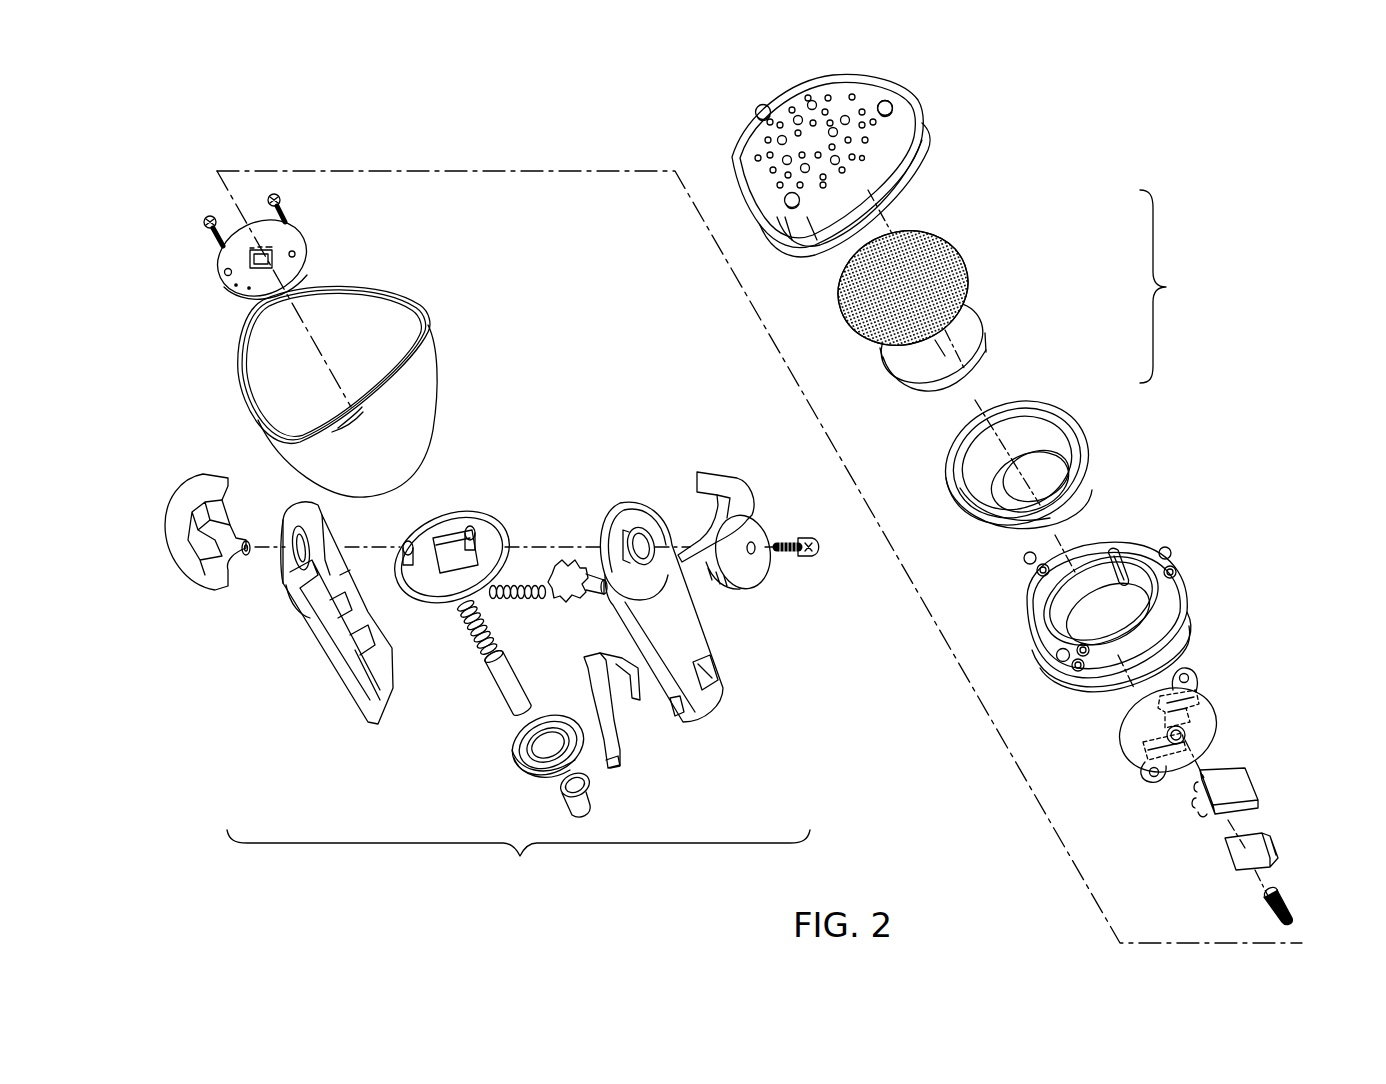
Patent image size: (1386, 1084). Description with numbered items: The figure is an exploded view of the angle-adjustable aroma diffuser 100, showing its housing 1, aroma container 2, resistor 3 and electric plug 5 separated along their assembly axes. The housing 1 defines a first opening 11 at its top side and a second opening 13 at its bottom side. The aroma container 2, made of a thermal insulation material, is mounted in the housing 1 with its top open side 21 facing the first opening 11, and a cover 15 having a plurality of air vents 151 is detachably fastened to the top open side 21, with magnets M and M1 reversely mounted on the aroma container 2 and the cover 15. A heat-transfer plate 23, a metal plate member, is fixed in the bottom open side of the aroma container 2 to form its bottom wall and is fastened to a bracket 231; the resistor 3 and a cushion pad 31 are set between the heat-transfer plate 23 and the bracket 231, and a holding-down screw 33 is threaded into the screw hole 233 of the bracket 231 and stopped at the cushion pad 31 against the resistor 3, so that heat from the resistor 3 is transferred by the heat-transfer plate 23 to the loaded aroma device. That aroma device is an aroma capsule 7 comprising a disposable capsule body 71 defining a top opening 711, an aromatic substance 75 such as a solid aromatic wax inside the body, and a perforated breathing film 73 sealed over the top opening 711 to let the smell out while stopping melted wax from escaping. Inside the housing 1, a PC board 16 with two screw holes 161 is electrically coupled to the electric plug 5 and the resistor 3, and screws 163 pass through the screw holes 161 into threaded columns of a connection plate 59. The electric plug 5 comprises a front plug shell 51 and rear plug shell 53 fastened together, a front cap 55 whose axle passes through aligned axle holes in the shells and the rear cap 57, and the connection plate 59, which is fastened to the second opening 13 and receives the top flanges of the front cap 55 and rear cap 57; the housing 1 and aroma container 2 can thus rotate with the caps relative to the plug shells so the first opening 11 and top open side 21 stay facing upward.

The angle-adjustable aroma diffuser 100 is at (1190, 118).
The housing 1 is at (425, 370).
The first opening 11 is at (362, 347).
The second opening 13 is at (408, 484).
The cover 15 is at (865, 97).
The air vents 151 is at (835, 160).
The magnet M1 is at (892, 108).
The PC board 16 is at (297, 243).
The screw holes 161 is at (225, 270).
The screws 163 is at (206, 216).
The aroma container 2 is at (1172, 590).
The top open side 21 is at (1092, 572).
The magnet M is at (1168, 548).
The heat-transfer plate 23 is at (1195, 685).
The bracket 231 is at (1190, 710).
The screw hole 233 is at (1168, 735).
The resistor 3 is at (1230, 790).
The cushion pad 31 is at (1258, 835).
The holding-down screw 33 is at (1290, 905).
The electric plug 5 is at (492, 682).
The front plug shell 51 is at (345, 688).
The rear plug shell 53 is at (695, 705).
The front cap 55 is at (215, 585).
The rear cap 57 is at (742, 592).
The connection plate 59 is at (440, 585).
The aroma capsule 7 is at (1007, 368).
The disposable capsule body 71 is at (1062, 420).
The top opening 711 is at (1022, 428).
The breathing film 73 is at (935, 250).
The aromatic substance 75 is at (970, 330).